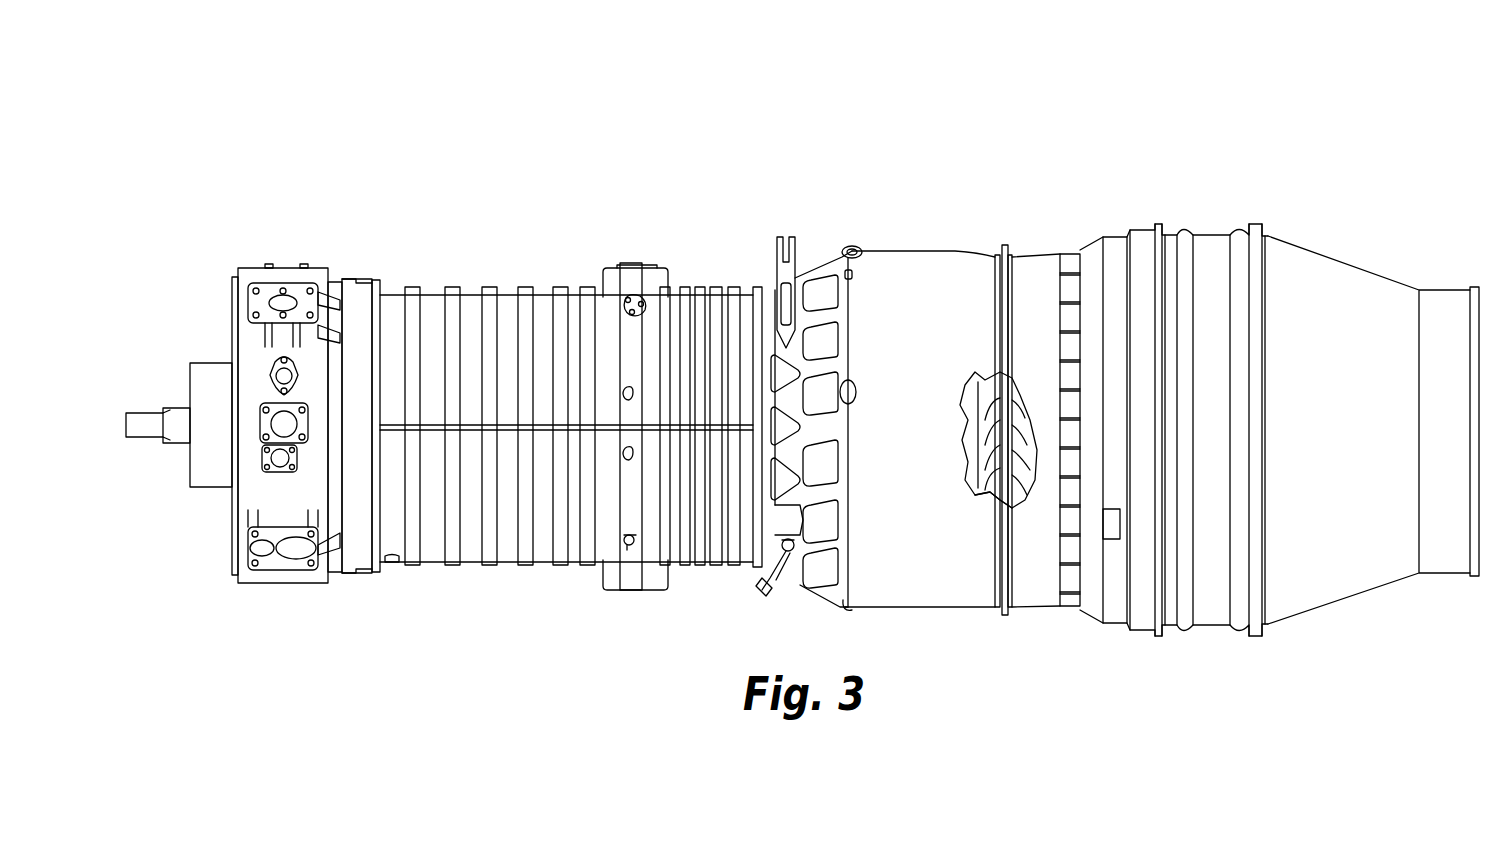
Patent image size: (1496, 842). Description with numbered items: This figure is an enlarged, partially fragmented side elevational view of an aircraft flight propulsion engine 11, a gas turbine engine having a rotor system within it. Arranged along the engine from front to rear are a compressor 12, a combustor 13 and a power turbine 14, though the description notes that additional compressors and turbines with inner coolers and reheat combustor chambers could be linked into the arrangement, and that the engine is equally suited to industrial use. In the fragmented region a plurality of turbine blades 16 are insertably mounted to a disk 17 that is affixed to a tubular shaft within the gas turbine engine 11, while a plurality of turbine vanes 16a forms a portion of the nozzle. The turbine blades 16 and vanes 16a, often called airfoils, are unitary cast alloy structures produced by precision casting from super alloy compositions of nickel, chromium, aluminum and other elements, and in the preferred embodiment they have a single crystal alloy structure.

The aircraft flight propulsion engine 11 is at (1357, 152).
The compressor 12 is at (467, 563).
The combustor 13 is at (935, 251).
The power turbine 14 is at (1216, 235).
The turbine blades 16 is at (1020, 372).
The turbine vanes 16a is at (978, 503).
The disk 17 is at (1020, 507).